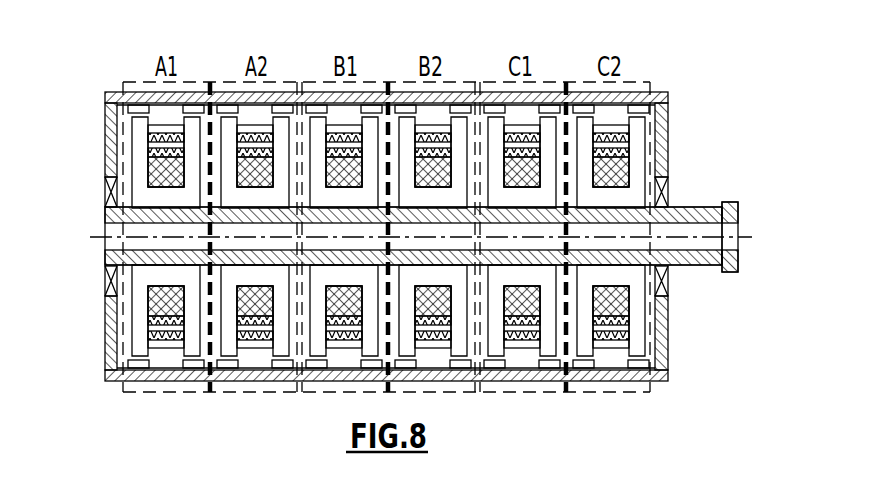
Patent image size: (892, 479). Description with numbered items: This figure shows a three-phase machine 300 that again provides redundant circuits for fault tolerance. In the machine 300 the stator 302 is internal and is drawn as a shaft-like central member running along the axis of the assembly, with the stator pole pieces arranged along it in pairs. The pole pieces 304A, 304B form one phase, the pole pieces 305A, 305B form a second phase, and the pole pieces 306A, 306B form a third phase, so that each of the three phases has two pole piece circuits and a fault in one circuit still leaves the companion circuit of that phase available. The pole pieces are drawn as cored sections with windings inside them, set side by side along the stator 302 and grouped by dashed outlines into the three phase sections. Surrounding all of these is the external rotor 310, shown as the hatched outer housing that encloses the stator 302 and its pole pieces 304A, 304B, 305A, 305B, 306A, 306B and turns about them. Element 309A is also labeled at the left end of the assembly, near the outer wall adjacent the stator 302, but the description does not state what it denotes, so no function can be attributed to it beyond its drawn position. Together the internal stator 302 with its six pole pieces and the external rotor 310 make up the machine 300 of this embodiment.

The machine 300 is at (756, 216).
The stator 302 is at (703, 207).
The pole piece 304A is at (142, 148).
The pole piece 304B is at (229, 148).
The pole piece 305A is at (318, 148).
The pole piece 305B is at (406, 148).
The pole piece 306A is at (547, 148).
The pole piece 306B is at (636, 148).
The bearing 309A is at (143, 193).
The external rotor 310 is at (668, 379).